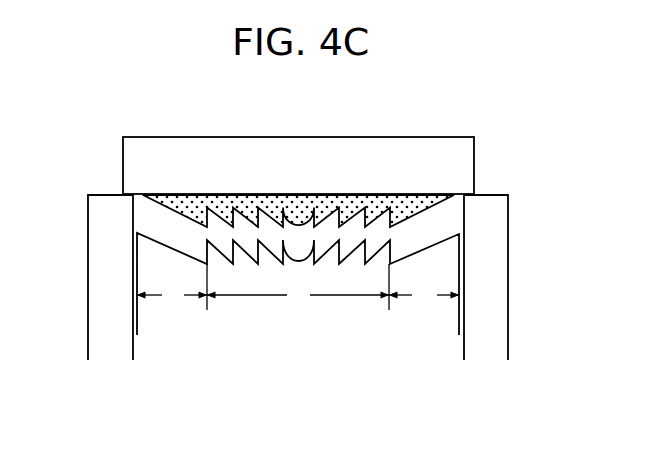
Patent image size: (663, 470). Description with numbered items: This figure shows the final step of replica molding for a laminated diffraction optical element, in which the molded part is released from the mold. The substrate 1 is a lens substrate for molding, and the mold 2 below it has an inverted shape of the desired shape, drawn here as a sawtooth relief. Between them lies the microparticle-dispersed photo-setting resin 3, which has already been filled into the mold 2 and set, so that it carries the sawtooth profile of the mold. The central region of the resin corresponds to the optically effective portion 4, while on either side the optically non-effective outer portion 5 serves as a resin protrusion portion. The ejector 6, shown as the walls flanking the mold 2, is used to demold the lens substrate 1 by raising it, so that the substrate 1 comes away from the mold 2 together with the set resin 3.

The substrate 1 is at (413, 147).
The mold 2 is at (165, 317).
The microparticle-dispersed photo-setting resin 3 is at (301, 202).
The optically effective portion 4 is at (298, 287).
The optically non-effective outer portion 5 is at (298, 295).
The ejector 6 is at (485, 266).